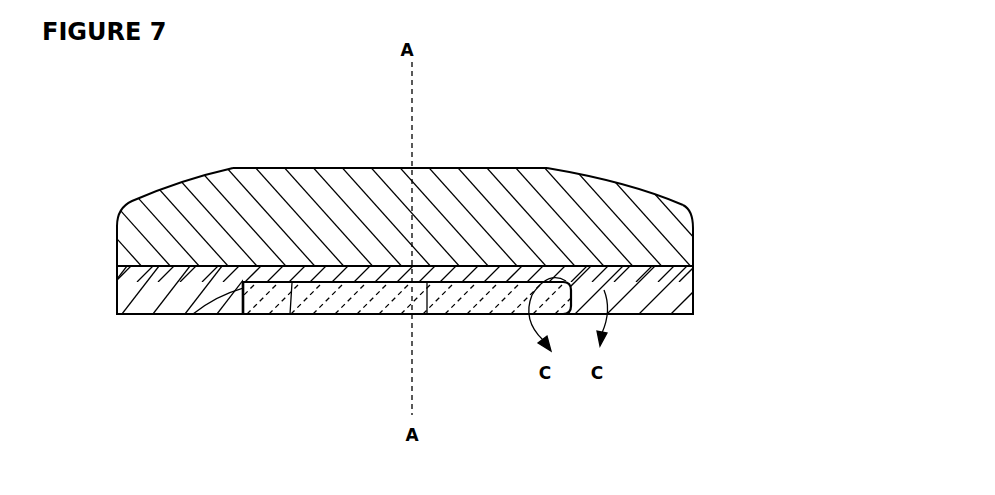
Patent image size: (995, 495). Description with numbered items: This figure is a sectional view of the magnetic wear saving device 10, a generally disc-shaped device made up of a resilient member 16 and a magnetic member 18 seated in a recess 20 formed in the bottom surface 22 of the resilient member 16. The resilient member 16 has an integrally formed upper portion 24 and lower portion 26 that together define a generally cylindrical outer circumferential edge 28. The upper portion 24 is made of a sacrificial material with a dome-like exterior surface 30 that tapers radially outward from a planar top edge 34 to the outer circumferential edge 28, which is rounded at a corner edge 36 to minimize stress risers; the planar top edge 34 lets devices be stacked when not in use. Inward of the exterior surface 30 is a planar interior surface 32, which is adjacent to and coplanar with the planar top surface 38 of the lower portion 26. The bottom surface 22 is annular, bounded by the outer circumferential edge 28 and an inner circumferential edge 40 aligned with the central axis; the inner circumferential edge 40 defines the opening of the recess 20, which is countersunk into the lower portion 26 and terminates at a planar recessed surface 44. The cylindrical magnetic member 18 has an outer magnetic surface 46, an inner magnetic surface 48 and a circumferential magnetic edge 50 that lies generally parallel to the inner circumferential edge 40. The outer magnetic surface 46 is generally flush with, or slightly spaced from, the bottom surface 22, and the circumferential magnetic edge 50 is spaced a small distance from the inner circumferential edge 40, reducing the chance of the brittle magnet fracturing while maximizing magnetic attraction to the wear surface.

The magnetic wear saving device 10 is at (669, 79).
The resilient member 16 is at (158, 185).
The magnetic member 18 is at (445, 326).
The recess 20 is at (355, 296).
The bottom surface 22 is at (653, 316).
The upper portion 24 is at (537, 167).
The lower portion 26 is at (110, 278).
The outer circumferential edge 28 is at (117, 246).
The exterior surface 30 is at (623, 182).
The interior surface 32 is at (383, 266).
The planar top edge 34 is at (333, 167).
The corner edge 36 is at (683, 202).
The top surface 38 is at (158, 270).
The inner circumferential edge 40 is at (193, 314).
The recessed surface 44 is at (427, 314).
The outer magnetic surface 46 is at (328, 316).
The inner magnetic surface 48 is at (290, 314).
The circumferential magnetic edge 50 is at (250, 290).